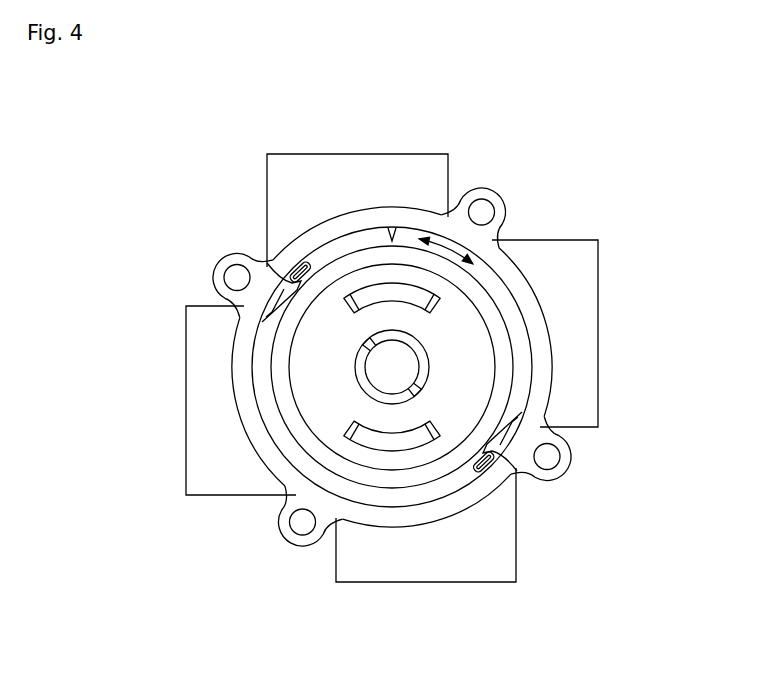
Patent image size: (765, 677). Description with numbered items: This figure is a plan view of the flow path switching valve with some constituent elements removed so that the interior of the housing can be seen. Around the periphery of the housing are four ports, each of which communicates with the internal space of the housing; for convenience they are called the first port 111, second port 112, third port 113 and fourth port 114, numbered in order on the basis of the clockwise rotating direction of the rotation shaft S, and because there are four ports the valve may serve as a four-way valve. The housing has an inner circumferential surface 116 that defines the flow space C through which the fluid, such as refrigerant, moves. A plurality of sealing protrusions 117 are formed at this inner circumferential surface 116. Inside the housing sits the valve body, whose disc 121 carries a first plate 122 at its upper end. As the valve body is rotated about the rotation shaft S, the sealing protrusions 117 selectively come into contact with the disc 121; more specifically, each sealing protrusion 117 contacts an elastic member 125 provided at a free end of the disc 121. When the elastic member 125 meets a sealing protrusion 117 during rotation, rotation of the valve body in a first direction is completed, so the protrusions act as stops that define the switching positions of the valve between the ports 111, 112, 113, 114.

The first port 111 is at (452, 160).
The second port 112 is at (567, 240).
The third port 113 is at (520, 536).
The fourth port 114 is at (205, 305).
The inner circumferential surface 116 is at (392, 230).
The sealing protrusion 117 is at (258, 323).
The disc 121 is at (318, 250).
The first plate 122 is at (468, 337).
The elastic member 125 is at (297, 264).
The flow space C is at (352, 238).
The rotation shaft S is at (392, 367).